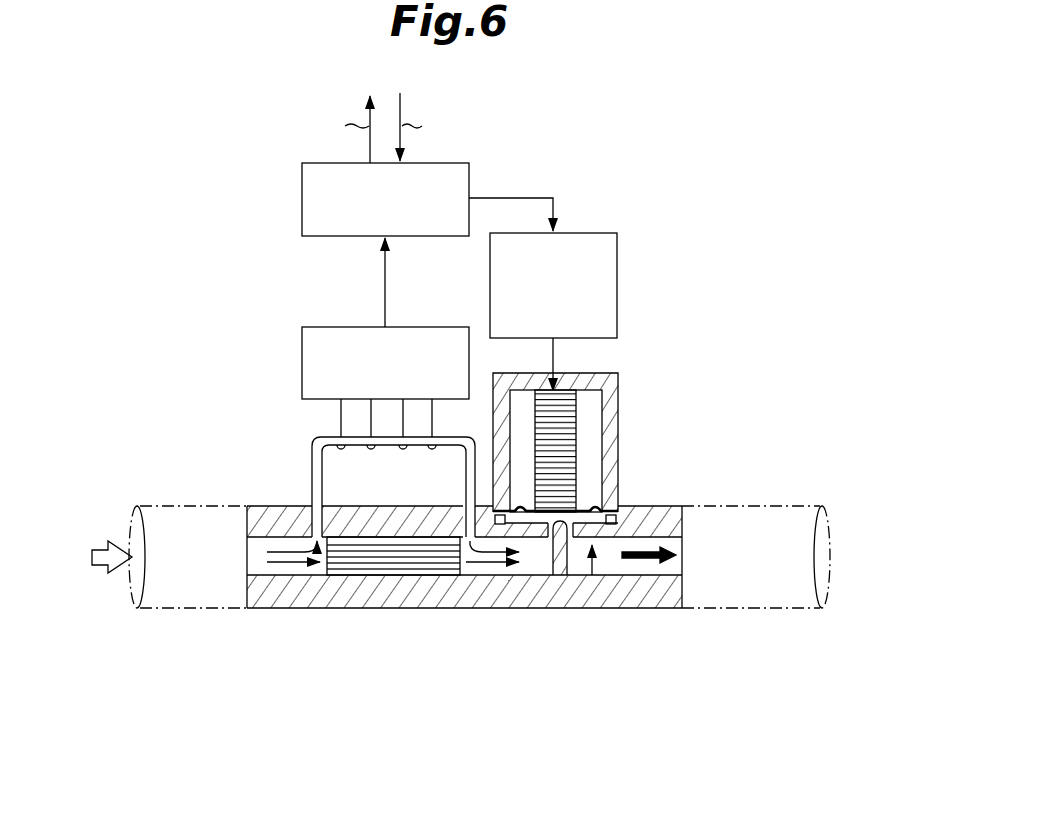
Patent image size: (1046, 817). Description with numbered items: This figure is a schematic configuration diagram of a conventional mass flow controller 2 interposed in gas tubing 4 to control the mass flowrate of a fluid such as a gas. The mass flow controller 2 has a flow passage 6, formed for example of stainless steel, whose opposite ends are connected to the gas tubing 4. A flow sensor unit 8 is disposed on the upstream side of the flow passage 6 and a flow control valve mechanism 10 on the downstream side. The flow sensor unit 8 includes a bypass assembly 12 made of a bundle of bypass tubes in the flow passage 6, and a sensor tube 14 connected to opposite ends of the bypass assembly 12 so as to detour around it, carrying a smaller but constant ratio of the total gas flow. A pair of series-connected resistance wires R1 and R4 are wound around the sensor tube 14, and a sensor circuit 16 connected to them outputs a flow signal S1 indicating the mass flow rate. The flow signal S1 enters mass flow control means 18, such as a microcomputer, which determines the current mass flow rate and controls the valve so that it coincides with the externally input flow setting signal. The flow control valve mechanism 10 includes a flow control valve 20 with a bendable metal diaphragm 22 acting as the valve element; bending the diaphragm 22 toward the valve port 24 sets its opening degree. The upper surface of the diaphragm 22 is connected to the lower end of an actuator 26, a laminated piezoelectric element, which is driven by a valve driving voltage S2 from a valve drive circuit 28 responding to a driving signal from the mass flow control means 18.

The mass flow controller 2 is at (828, 345).
The gas tubing 4 is at (196, 608).
The flow passage 6 is at (353, 605).
The flow sensor unit 8 is at (245, 374).
The flow control valve mechanism 10 is at (710, 443).
The bypass assembly 12 is at (388, 557).
The sensor tube 14 is at (312, 437).
The sensor circuit 16 is at (328, 327).
The mass flow control means 18 is at (302, 196).
The flow control valve 20 is at (592, 575).
The diaphragm 22 is at (590, 506).
The valve port 24 is at (550, 540).
The actuator 26 is at (568, 430).
The valve drive circuit 28 is at (617, 288).
The resistance wire R1 is at (350, 433).
The resistance wire R4 is at (412, 433).
The flow signal S1 is at (387, 283).
The valve driving voltage S2 is at (555, 358).